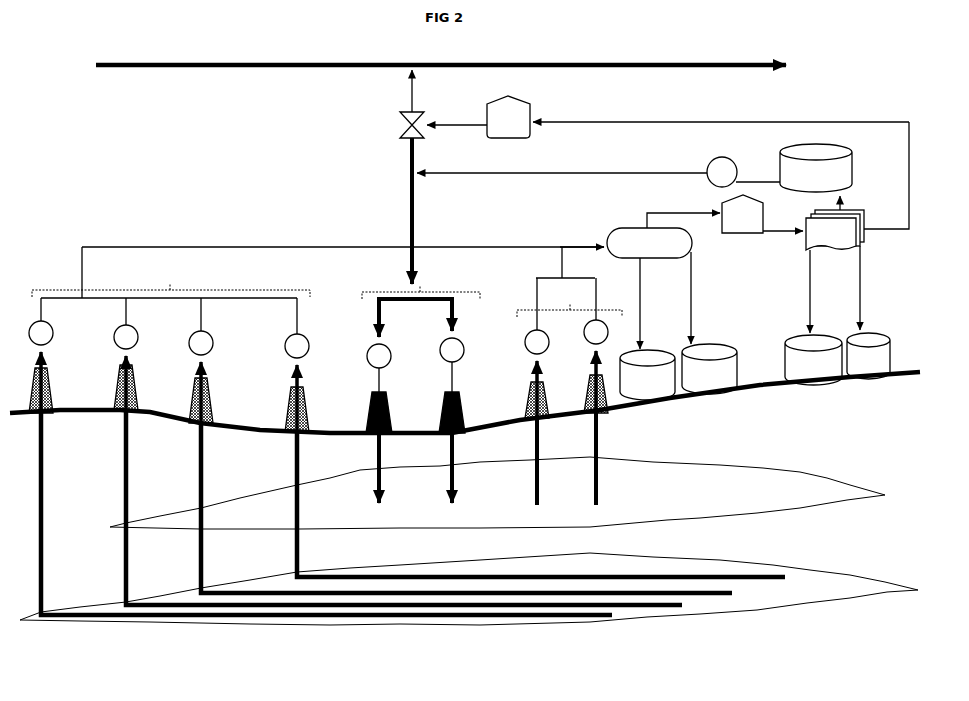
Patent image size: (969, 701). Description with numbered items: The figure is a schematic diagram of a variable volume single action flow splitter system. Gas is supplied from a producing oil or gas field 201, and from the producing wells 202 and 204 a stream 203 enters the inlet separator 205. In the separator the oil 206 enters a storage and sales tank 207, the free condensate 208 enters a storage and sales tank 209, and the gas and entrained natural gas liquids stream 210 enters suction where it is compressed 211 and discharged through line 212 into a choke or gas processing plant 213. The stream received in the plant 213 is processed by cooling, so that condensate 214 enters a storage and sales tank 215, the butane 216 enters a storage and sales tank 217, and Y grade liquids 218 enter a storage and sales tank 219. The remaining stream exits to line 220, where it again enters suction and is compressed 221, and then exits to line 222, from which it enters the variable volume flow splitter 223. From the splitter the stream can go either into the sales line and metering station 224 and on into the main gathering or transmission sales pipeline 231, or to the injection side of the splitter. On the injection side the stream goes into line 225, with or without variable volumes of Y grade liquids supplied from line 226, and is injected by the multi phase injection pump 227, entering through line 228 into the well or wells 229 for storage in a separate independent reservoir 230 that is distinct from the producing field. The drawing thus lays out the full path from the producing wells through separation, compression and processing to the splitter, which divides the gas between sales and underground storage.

The producing oil or gas field 201 is at (805, 568).
The producing wells 202 is at (407, 436).
The stream 203 is at (100, 244).
The producing wells 204 is at (569, 391).
The inlet separator 205 is at (649, 243).
The oil 206 is at (643, 278).
The storage and sales tank 207 is at (647, 375).
The free condensate 208 is at (695, 278).
The storage and sales tank 209 is at (709, 369).
The gas and entrained natural gas liquids stream 210 is at (670, 210).
The compressor 211 is at (742, 214).
The line 212 is at (784, 238).
The choke or gas processing plant 213 is at (835, 230).
The condensate 214 is at (813, 283).
The storage and sales tank 215 is at (813, 360).
The butane 216 is at (864, 283).
The storage and sales tank 217 is at (868, 356).
The Y grade liquids 218 is at (848, 202).
The storage and sales tank 219 is at (816, 168).
The line 220 is at (885, 119).
The compressor 221 is at (508, 117).
The line 222 is at (462, 118).
The variable volume flow splitter 223 is at (400, 122).
The sales line and metering station 224 is at (402, 92).
The line 225 is at (405, 158).
The line 226 is at (767, 173).
The multi phase injection pump 227 is at (722, 172).
The line 228 is at (627, 171).
The well or wells 229 is at (421, 380).
The separate independent reservoir 230 is at (822, 470).
The main gathering or transmission sales pipeline 231 is at (185, 74).